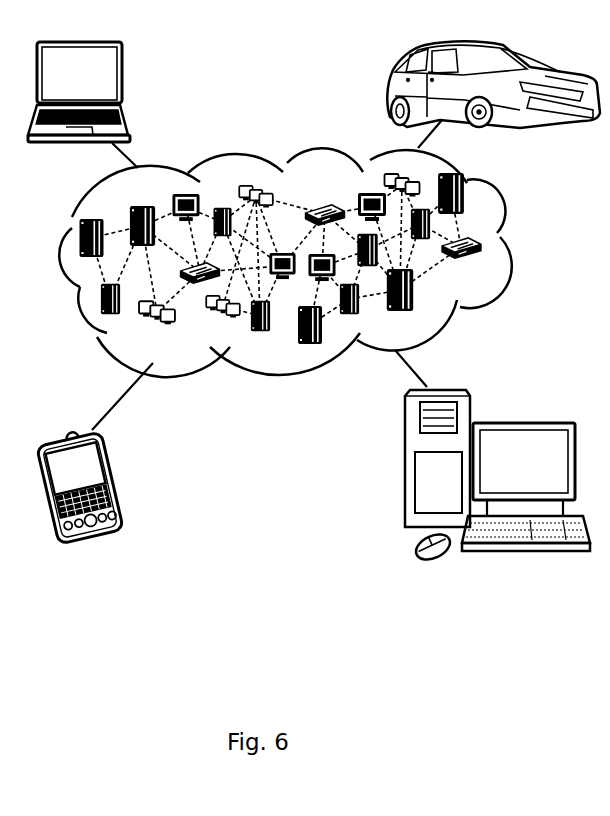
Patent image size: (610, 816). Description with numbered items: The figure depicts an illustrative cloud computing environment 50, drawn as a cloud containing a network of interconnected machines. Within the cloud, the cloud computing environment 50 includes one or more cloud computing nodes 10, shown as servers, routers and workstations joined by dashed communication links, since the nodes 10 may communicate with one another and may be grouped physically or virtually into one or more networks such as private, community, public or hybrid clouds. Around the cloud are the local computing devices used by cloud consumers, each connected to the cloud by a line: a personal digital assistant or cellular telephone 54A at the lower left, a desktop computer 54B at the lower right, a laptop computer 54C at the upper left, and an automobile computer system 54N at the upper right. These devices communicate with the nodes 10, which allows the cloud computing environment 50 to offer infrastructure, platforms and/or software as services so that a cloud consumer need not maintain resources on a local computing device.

The cloud computing nodes 10 is at (498, 266).
The cloud computing environment 50 is at (513, 247).
The personal digital assistant or cellular telephone 54A is at (117, 480).
The desktop computer 54B is at (523, 422).
The laptop computer 54C is at (122, 78).
The automobile computer system 54N is at (390, 90).